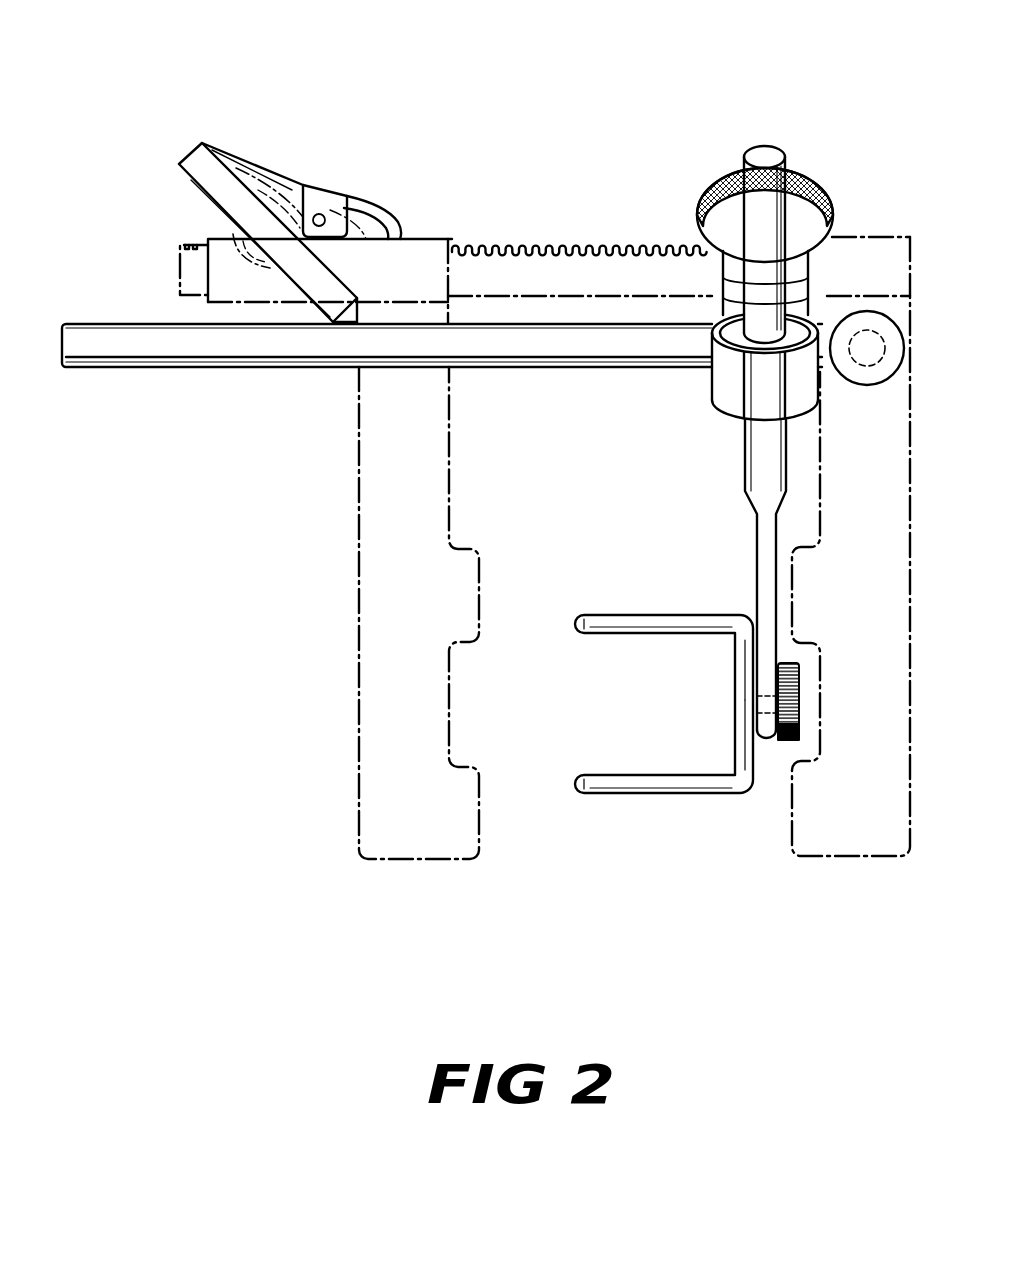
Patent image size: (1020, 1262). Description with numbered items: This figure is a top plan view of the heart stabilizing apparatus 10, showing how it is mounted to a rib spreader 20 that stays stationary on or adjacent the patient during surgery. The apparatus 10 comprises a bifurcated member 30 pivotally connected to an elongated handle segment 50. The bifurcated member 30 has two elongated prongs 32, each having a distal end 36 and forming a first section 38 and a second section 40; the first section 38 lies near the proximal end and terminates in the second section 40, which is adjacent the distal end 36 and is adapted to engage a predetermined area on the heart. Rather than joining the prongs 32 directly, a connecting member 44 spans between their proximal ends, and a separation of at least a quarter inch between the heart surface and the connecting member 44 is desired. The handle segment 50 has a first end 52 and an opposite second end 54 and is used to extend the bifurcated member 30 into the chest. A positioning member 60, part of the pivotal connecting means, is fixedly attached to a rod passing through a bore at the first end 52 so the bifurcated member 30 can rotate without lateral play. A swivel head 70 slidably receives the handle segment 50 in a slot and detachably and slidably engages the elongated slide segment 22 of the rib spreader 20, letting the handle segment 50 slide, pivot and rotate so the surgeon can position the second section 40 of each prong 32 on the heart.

The apparatus 10 is at (471, 78).
The rib spreader 20 is at (420, 237).
The slide segment 22 is at (220, 365).
The bifurcated member 30 is at (637, 713).
The prong 32 is at (657, 615).
The distal end 36 is at (578, 618).
The first section 38 is at (735, 657).
The second section 40 is at (657, 635).
The connecting member 44 is at (740, 733).
The handle segment 50 is at (736, 255).
The first end 52 is at (767, 731).
The second end 54 is at (781, 147).
The positioning member 60 is at (800, 712).
The swivel head 70 is at (701, 182).